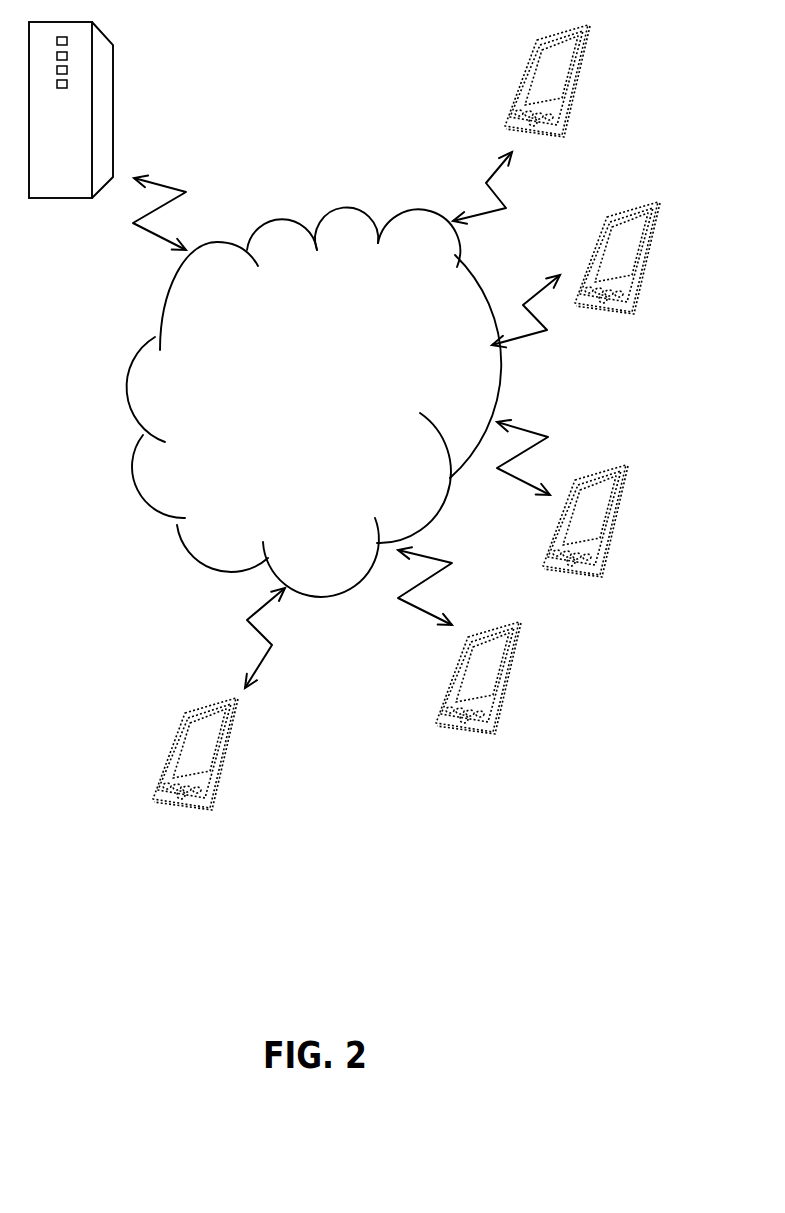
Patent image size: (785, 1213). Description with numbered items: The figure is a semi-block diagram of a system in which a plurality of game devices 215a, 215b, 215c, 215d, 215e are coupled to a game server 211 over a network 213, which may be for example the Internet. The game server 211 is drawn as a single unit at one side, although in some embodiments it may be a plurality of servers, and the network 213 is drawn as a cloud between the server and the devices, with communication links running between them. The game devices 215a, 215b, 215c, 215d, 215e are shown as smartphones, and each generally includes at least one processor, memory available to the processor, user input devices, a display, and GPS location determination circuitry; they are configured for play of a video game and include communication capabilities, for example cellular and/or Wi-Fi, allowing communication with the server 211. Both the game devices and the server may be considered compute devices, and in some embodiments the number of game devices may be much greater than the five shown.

The game server 211 is at (113, 72).
The network 213 is at (287, 218).
The game device 215a is at (570, 73).
The game device 215b is at (643, 252).
The game device 215c is at (615, 523).
The game device 215d is at (485, 728).
The game device 215e is at (173, 747).